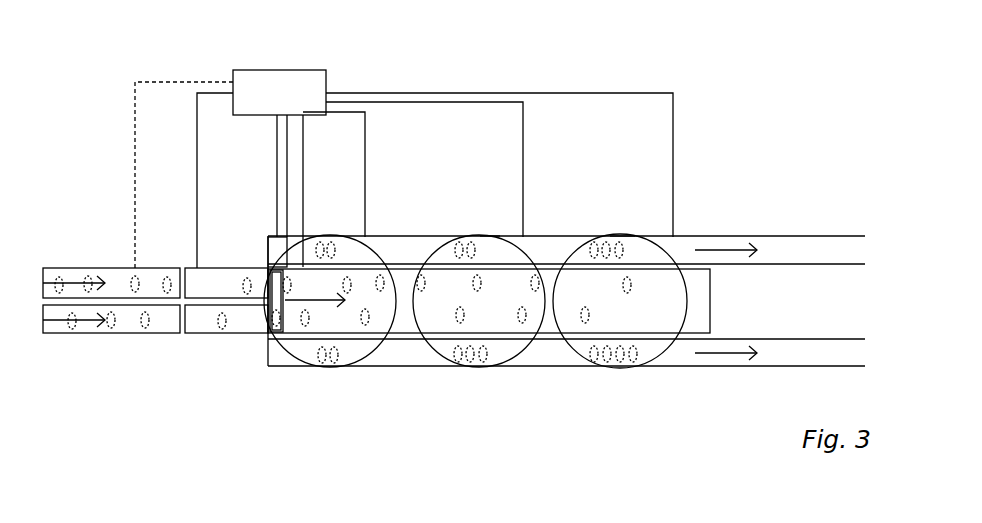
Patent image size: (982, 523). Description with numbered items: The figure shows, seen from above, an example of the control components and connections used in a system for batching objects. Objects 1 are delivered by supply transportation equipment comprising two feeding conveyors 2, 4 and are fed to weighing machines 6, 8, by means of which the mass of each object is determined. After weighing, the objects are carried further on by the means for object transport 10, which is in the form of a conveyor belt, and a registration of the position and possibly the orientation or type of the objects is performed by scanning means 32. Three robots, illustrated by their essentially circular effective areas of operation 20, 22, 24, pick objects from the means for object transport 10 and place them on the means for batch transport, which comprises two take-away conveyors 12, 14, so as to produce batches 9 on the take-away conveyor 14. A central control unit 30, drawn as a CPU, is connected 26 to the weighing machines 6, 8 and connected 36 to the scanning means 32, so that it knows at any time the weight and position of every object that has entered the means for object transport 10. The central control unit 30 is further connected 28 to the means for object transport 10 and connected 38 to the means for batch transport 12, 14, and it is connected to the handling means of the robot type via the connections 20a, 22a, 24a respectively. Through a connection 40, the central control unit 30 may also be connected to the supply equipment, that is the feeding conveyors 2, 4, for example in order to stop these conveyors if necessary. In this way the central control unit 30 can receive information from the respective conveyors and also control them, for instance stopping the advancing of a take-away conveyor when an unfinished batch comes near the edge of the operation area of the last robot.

The objects 1 is at (140, 273).
The feeding conveyor 2 is at (97, 268).
The feeding conveyor 4 is at (112, 335).
The weighing machine 6 is at (217, 268).
The weighing machine 8 is at (200, 335).
The batches 9 is at (647, 355).
The means for object transport 10 is at (424, 232).
The take-away conveyor 12 is at (548, 235).
The take-away conveyor 14 is at (545, 367).
The effective area of operation 20 is at (333, 232).
The effective area of operation 22 is at (490, 233).
The effective area of operation 24 is at (622, 233).
The connection 20a is at (365, 152).
The connection 22a is at (523, 147).
The connection 24a is at (673, 147).
The connection 26 is at (197, 133).
The connection 28 is at (305, 128).
The central control unit 30 is at (322, 98).
The scanning means 32 is at (270, 313).
The connection 36 is at (270, 233).
The connection 38 is at (288, 157).
The connection 40 is at (135, 108).